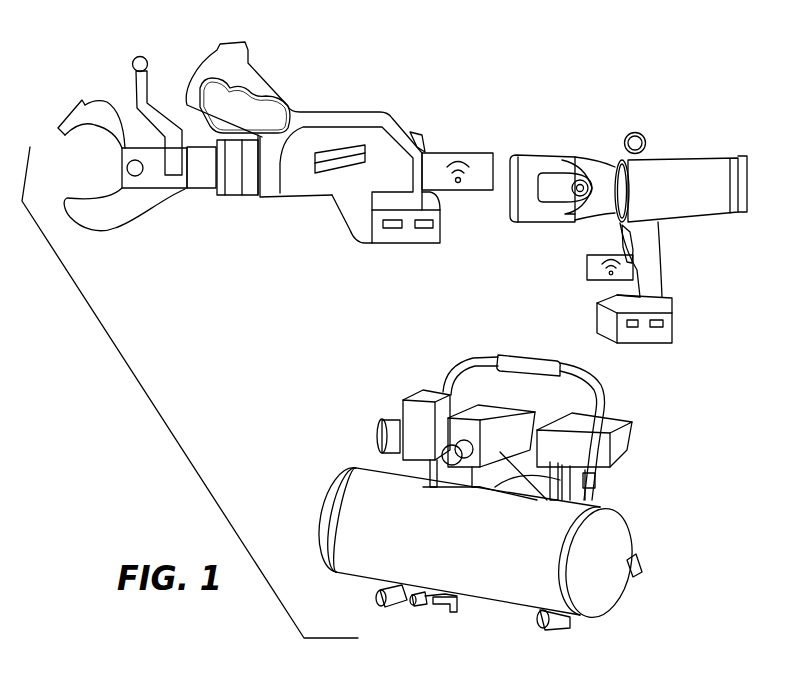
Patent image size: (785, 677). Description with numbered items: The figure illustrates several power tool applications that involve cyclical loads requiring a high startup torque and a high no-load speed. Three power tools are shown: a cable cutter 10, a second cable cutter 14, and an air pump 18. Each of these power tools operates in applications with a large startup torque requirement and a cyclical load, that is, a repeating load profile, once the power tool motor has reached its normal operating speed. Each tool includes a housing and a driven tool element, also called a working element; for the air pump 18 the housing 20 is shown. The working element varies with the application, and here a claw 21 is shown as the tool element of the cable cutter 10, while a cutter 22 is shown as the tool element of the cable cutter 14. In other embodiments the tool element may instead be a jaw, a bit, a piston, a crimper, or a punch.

The cable cutter 10 is at (393, 110).
The cable cutter 14 is at (685, 150).
The air pump 18 is at (642, 453).
The housing 20 is at (627, 503).
The claw 21 is at (118, 113).
The cutter 22 is at (580, 177).